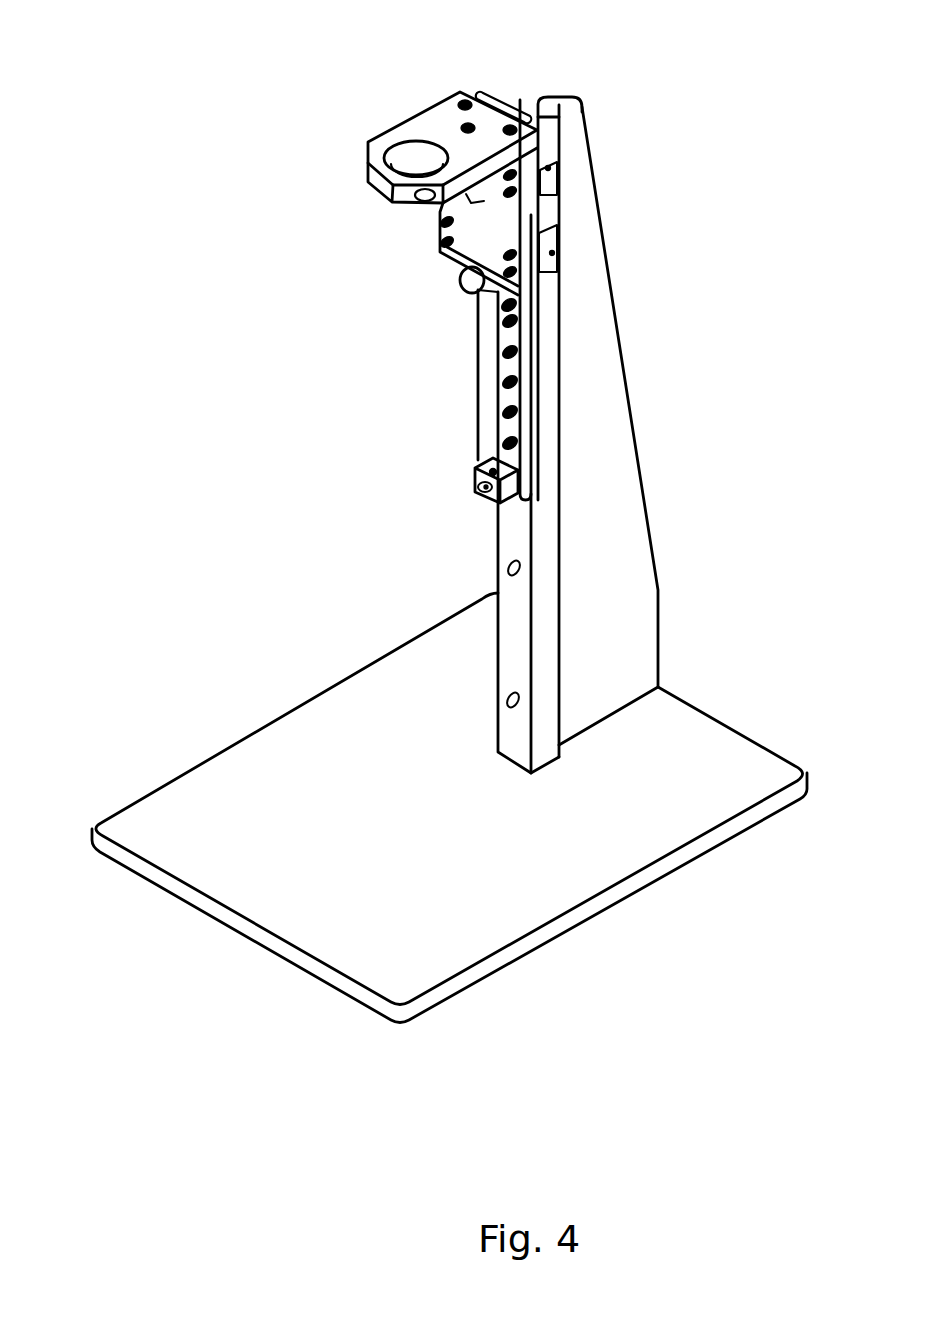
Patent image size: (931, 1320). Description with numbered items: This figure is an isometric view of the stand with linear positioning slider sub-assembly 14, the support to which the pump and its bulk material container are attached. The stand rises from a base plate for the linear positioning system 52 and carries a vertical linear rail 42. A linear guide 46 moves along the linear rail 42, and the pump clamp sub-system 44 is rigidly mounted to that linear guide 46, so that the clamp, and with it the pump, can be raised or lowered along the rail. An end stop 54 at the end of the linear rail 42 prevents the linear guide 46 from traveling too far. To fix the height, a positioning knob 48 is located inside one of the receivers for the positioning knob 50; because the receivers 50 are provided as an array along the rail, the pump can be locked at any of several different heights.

The stand with linear positioning slider sub-assembly 14 is at (633, 442).
The linear rail 42 is at (476, 405).
The pump clamp sub-system 44 is at (367, 140).
The linear guide 46 is at (543, 164).
The positioning knob 48 is at (458, 290).
The receiver for positioning knob 50 is at (500, 360).
The base plate for linear positioning system 52 is at (645, 878).
The end stop for linear rail 54 is at (472, 500).